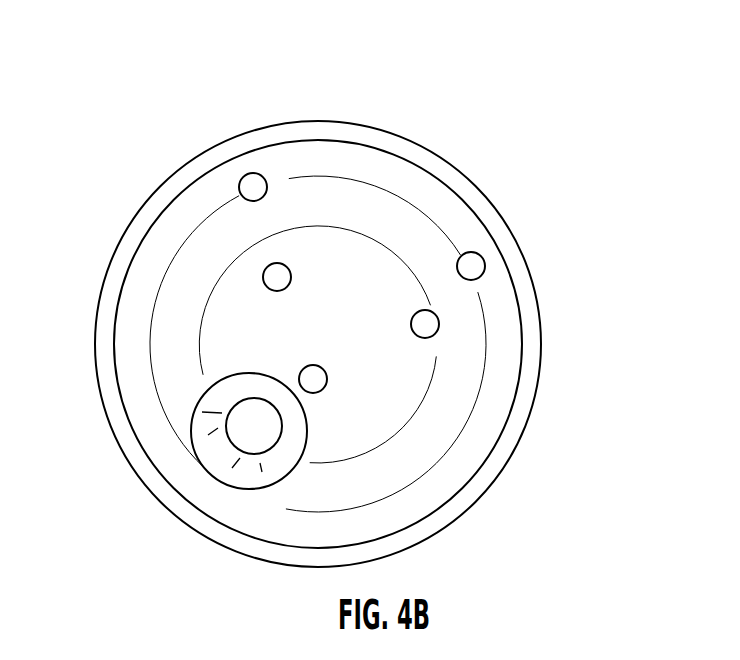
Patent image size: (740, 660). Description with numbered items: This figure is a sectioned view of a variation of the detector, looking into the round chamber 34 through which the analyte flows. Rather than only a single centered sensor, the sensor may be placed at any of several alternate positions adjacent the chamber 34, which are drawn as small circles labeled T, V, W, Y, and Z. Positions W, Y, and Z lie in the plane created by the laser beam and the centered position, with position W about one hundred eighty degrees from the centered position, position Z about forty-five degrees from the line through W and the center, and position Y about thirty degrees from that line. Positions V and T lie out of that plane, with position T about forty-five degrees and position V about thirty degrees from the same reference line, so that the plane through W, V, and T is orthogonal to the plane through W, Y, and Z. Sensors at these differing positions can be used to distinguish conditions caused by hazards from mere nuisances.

The chamber 34 is at (463, 508).
The alternate sensor position T is at (247, 174).
The alternate sensor position V is at (263, 277).
The alternate sensor position W is at (327, 379).
The alternate sensor position Y is at (439, 322).
The alternate sensor position Z is at (485, 265).